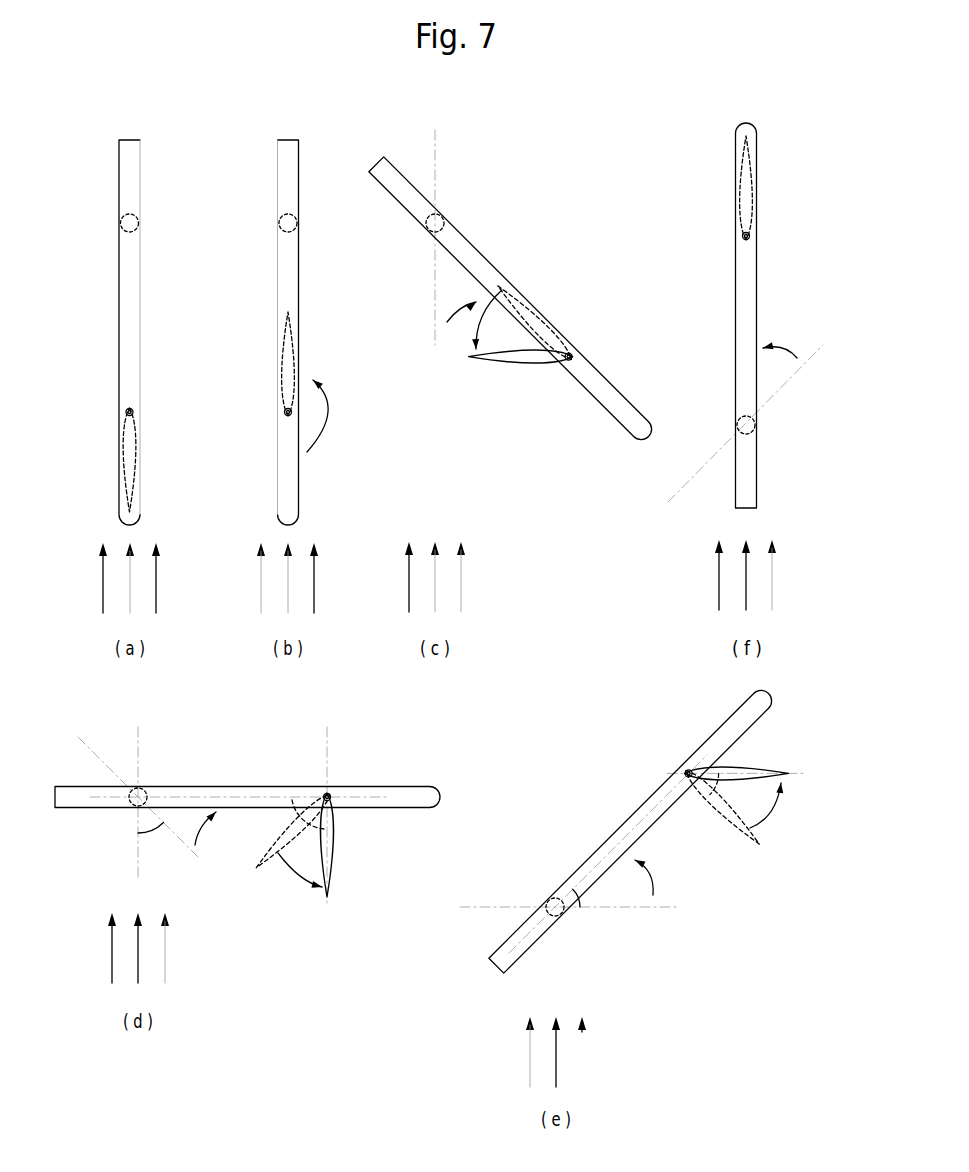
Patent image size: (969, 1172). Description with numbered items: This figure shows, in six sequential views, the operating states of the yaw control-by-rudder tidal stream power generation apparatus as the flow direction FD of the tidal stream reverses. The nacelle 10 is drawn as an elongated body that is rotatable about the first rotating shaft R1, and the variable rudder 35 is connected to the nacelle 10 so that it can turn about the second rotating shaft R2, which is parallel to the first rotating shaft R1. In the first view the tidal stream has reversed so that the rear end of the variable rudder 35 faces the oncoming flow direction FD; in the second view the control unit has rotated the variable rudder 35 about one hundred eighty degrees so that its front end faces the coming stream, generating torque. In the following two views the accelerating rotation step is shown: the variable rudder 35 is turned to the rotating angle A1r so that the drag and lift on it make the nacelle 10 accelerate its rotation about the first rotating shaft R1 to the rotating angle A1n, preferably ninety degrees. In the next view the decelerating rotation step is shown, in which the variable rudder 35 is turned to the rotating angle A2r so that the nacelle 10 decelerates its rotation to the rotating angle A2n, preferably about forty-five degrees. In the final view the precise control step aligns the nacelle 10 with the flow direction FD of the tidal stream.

The nacelle 10 is at (124, 305).
The variable rudder 35 is at (128, 445).
The first rotating shaft R1 is at (123, 212).
The second rotating shaft R2 is at (133, 412).
The flow direction FD is at (156, 600).
The 1n-th rotating angle A1n is at (147, 830).
The 1r-th rotating angle A1r is at (292, 806).
The 2n-th rotating angle A2n is at (583, 900).
The 2r-th rotating angle A2r is at (712, 785).